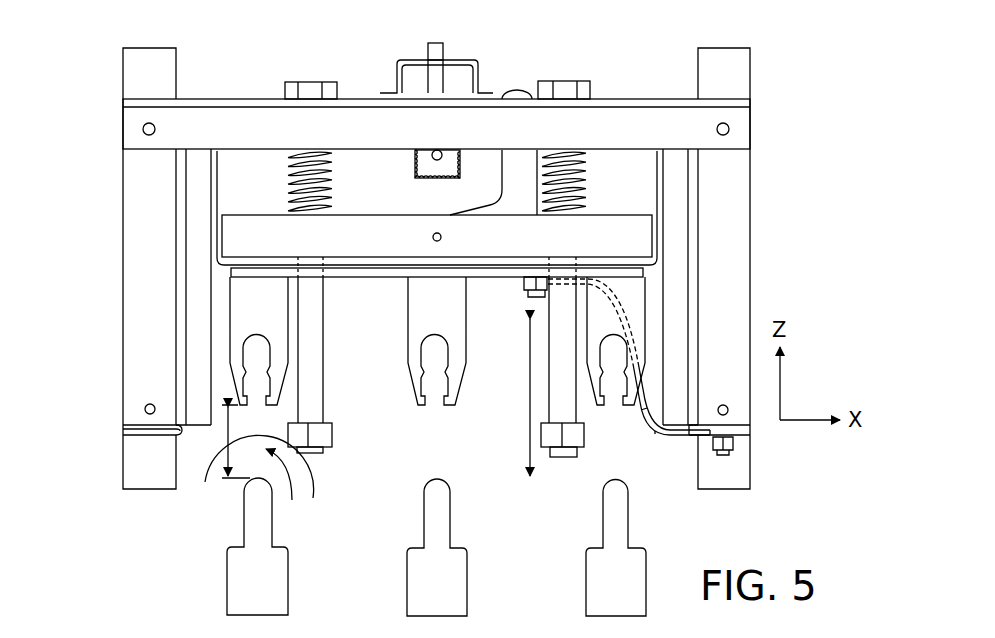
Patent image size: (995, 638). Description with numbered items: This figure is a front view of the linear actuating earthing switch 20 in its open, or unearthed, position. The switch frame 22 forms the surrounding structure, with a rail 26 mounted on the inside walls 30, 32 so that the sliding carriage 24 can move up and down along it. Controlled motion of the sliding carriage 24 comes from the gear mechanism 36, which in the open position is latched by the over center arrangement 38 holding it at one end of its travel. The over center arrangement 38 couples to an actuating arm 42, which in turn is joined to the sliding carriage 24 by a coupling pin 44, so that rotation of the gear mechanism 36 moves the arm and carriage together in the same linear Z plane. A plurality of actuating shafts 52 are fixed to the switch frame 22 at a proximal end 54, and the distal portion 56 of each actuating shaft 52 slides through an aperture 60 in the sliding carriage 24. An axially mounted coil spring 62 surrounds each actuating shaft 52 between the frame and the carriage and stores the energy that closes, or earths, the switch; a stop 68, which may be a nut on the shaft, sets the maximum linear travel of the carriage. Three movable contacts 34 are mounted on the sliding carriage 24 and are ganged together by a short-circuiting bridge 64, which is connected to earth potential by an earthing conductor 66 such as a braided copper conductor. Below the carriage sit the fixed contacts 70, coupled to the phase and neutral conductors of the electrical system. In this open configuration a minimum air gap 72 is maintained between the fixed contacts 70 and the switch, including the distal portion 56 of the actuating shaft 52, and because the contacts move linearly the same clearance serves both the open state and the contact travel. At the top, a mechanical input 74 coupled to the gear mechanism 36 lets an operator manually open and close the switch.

The linear actuating earthing switch 20 is at (818, 72).
The switch frame 22 is at (638, 122).
The sliding carriage 24 is at (358, 238).
The rail 26 is at (678, 190).
The inside wall 30 is at (143, 335).
The inside wall 32 is at (732, 245).
The movable contacts 34 is at (633, 407).
The gear mechanism 36 is at (413, 163).
The over center arrangement 38 is at (463, 158).
The actuating arm 42 is at (493, 207).
The coupling pin 44 is at (433, 238).
The actuating shafts 52 is at (308, 297).
The proximal end 54 is at (310, 82).
The distal portion 56 is at (312, 450).
The aperture 60 is at (305, 270).
The coil spring 62 is at (290, 198).
The short-circuiting bridge 64 is at (478, 270).
The earthing conductor 66 is at (675, 438).
The stop 68 is at (577, 435).
The fixed contacts 70 is at (407, 592).
The air gap 72 is at (222, 434).
The mechanical input 74 is at (432, 42).